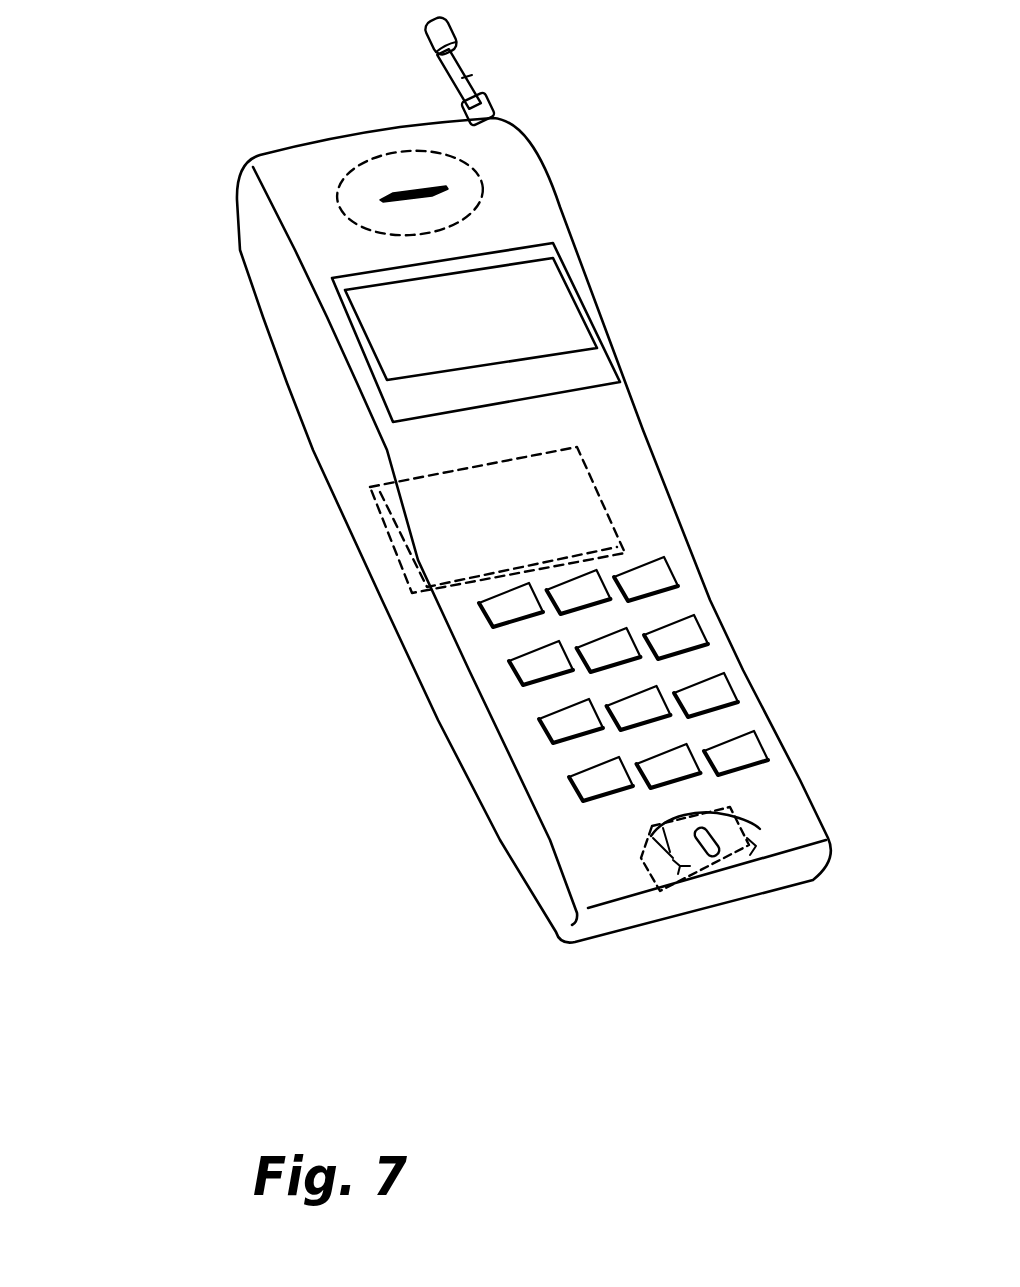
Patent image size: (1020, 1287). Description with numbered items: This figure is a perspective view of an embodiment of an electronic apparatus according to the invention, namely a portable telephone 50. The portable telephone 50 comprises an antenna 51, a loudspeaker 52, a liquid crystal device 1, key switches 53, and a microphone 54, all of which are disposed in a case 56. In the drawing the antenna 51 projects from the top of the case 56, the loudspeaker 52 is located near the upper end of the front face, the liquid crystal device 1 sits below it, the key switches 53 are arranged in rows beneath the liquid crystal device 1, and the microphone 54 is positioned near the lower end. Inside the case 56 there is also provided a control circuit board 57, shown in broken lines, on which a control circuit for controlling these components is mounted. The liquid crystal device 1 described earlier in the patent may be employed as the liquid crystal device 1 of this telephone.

The portable telephone 50 is at (196, 258).
The antenna 51 is at (467, 70).
The loudspeaker 52 is at (353, 163).
The liquid crystal device 1 is at (538, 312).
The case 56 is at (640, 505).
The control circuit board 57 is at (440, 535).
The key switches 53 is at (587, 775).
The microphone 54 is at (713, 880).